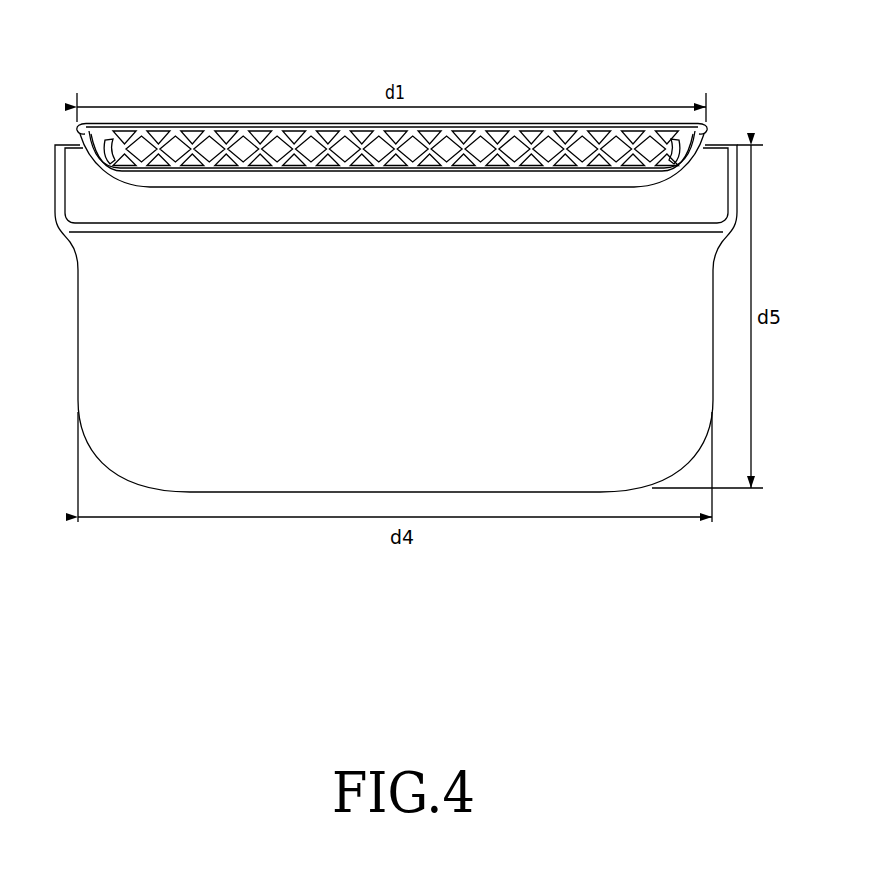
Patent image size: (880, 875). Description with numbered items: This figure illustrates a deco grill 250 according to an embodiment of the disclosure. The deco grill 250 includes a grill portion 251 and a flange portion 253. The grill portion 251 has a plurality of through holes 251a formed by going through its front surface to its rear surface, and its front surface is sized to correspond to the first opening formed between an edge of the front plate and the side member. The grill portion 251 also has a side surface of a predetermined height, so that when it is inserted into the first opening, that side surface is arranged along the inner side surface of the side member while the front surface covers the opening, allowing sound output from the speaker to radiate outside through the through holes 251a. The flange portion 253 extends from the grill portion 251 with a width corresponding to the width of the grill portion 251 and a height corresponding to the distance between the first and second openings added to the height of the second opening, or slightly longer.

The deco grill 250 is at (650, 61).
The grill portion 251 is at (103, 136).
The through holes 251a is at (310, 130).
The flange portion 253 is at (593, 470).